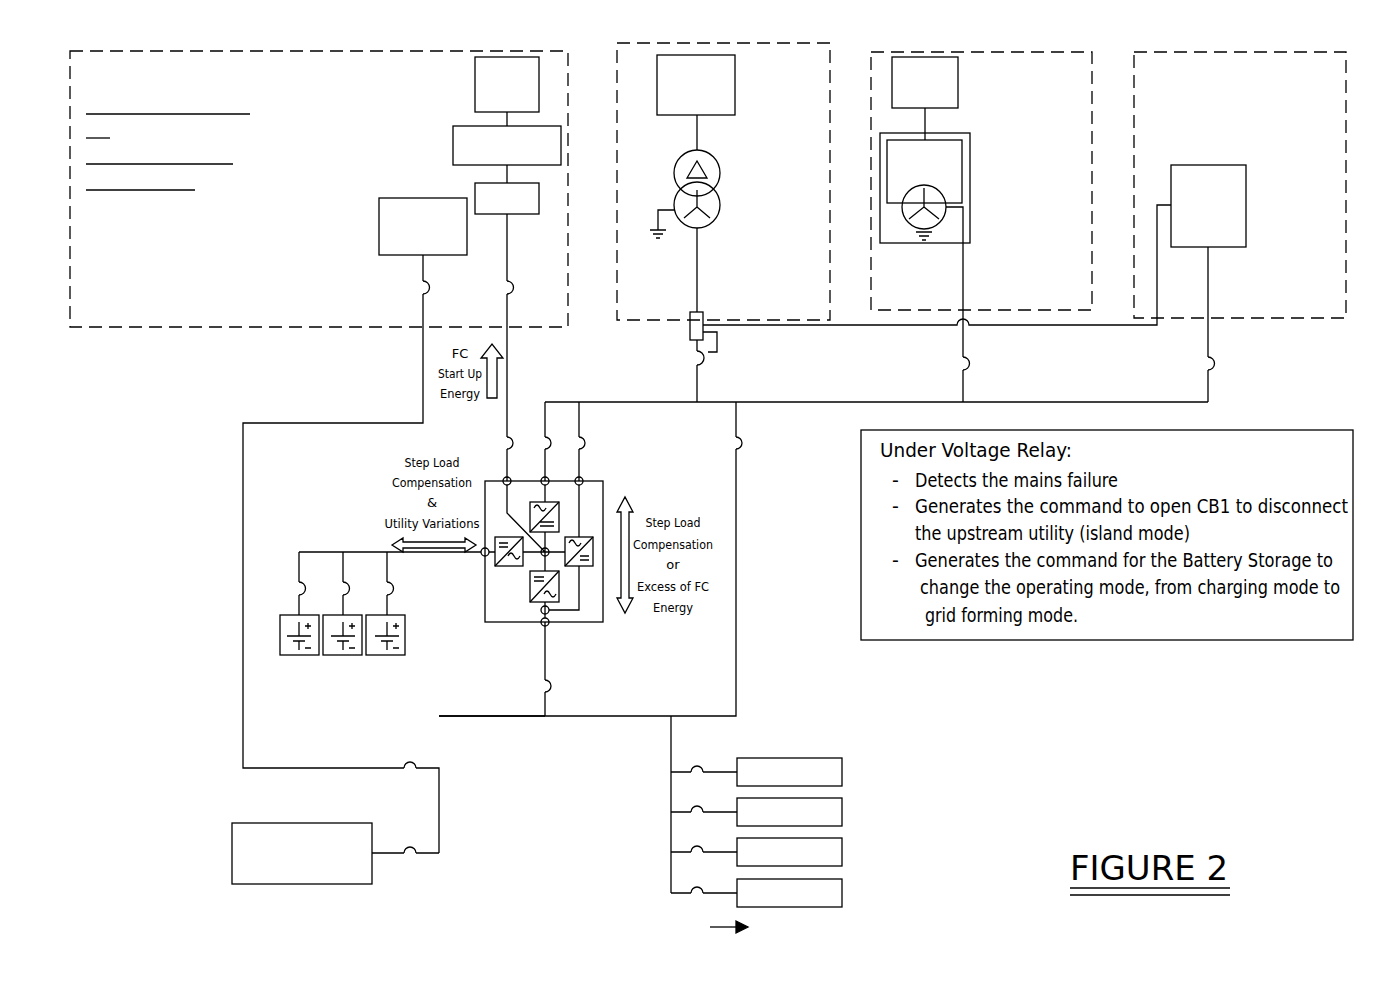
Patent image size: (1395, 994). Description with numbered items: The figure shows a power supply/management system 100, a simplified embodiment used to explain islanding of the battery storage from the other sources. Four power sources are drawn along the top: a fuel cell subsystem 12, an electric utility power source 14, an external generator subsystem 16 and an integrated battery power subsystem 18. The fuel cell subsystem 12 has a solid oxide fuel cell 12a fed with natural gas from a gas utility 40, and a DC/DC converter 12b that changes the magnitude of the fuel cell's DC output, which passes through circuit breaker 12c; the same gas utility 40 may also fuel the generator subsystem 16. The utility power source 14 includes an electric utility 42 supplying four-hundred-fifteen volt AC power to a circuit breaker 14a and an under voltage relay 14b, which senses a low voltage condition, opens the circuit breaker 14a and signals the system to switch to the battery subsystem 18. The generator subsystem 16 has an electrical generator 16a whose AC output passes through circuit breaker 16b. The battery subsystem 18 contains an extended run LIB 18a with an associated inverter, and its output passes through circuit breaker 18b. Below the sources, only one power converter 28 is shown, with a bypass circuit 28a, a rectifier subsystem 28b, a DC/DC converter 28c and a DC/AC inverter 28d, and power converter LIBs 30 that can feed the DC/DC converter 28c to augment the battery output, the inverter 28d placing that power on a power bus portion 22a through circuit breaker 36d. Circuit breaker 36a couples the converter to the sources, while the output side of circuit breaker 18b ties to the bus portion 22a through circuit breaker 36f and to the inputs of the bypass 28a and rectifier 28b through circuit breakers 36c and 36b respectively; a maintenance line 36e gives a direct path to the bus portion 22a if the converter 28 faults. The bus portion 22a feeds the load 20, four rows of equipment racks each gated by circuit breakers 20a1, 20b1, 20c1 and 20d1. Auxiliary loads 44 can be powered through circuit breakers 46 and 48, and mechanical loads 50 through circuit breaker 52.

The system 100 is at (196, 45).
The fuel cell subsystem 12 is at (570, 87).
The fuel cell 12a is at (453, 138).
The DC/DC converter 12b is at (525, 214).
The circuit breaker 12c is at (505, 292).
The gas utility 40 is at (475, 90).
The auxiliary loads 44 is at (379, 232).
The circuit breaker 46 is at (421, 284).
The electric utility power source 14 is at (830, 90).
The circuit breaker 14a is at (700, 368).
The under voltage relay 14b is at (692, 310).
The electric utility 42 is at (735, 108).
The external generator subsystem 16 is at (1092, 86).
The electrical generator 16a is at (962, 180).
The circuit breaker 16b is at (962, 364).
The integrated battery power subsystem 18 is at (1346, 80).
The extended run LIB 18a is at (1246, 222).
The circuit breaker 18b is at (1207, 364).
The circuit breaker 36a is at (512, 431).
The circuit breaker 36b is at (550, 431).
The circuit breaker 36c is at (586, 433).
The circuit breaker 36d is at (543, 689).
The maintenance line 36e is at (737, 548).
The circuit breaker 36f is at (741, 452).
The power converter 28 is at (547, 551).
The bypass circuit 28a is at (582, 566).
The rectifier subsystem 28b is at (559, 512).
The DC/DC converter 28c is at (503, 537).
The DC/AC inverter 28d is at (531, 622).
The power converter LIBs 30 is at (270, 619).
The power bus portion 22a is at (527, 718).
The circuit breaker 48 is at (412, 775).
The mechanical loads 50 is at (232, 836).
The circuit breaker 52 is at (414, 860).
The load 20 is at (755, 824).
The circuit breaker 20a1 is at (707, 768).
The circuit breaker 20b1 is at (673, 812).
The circuit breaker 20c1 is at (673, 852).
The circuit breaker 20d1 is at (673, 893).